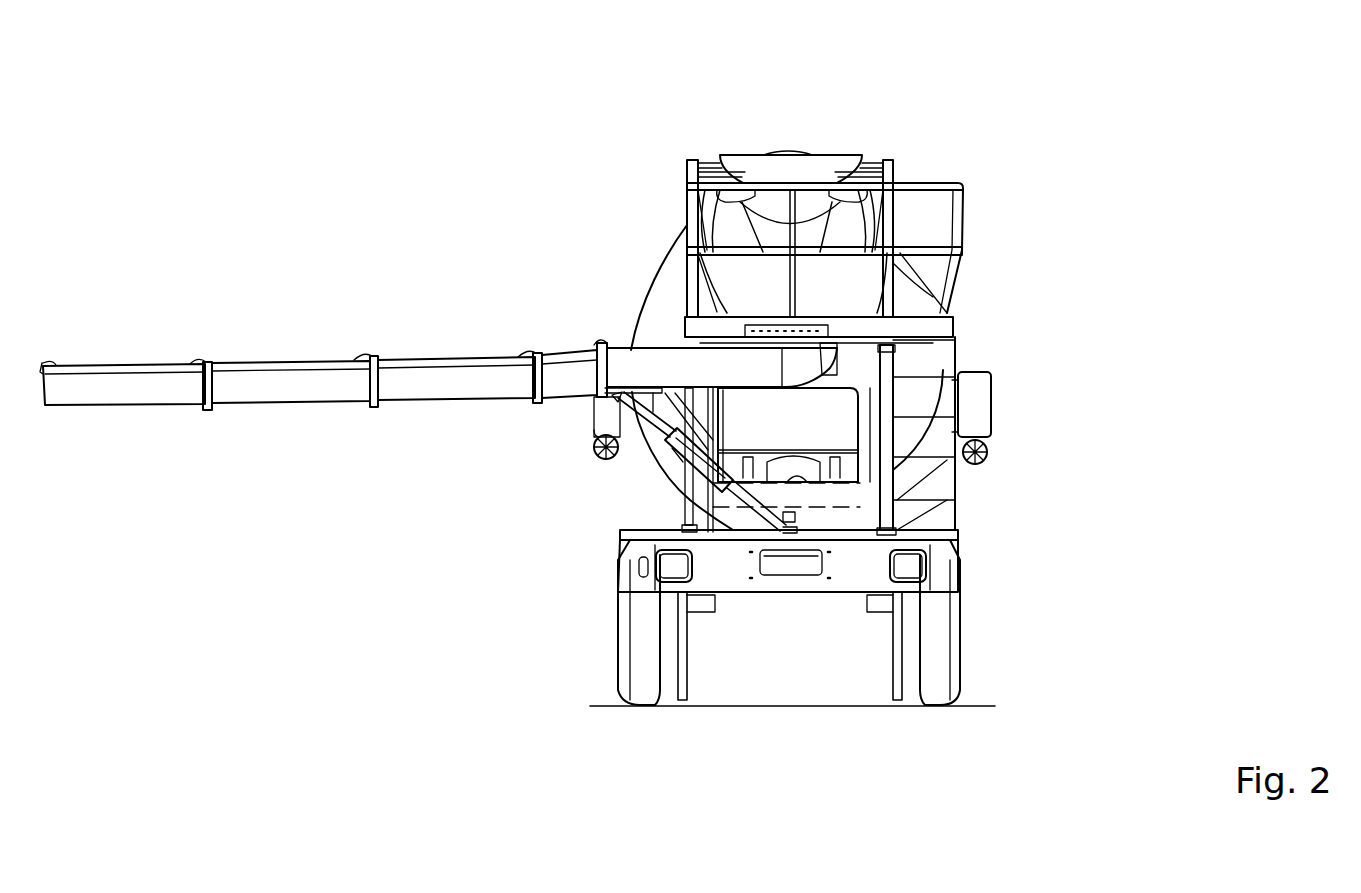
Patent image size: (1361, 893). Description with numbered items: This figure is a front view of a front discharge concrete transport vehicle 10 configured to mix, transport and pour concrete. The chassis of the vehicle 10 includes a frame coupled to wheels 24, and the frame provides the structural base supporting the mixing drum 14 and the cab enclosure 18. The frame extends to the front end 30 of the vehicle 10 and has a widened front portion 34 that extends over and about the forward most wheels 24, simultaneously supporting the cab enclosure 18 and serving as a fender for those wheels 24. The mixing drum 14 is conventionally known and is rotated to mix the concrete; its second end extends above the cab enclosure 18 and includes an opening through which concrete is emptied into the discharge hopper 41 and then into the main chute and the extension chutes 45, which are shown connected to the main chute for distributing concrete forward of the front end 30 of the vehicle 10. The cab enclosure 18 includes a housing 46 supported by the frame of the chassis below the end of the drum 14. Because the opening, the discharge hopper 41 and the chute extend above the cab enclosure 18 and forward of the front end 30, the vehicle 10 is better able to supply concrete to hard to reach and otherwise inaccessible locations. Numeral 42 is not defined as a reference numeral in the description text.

The front discharge concrete transport vehicle 10 is at (1133, 92).
The mixing drum 14 is at (648, 304).
The cab enclosure 18 is at (860, 487).
The wheels 24 is at (645, 683).
The front end 30 is at (813, 618).
The widened front portion 34 is at (940, 572).
The discharge hopper 41 is at (850, 275).
The hopper 42 is at (818, 165).
The extension chutes 45 is at (115, 395).
The housing 46 is at (897, 527).